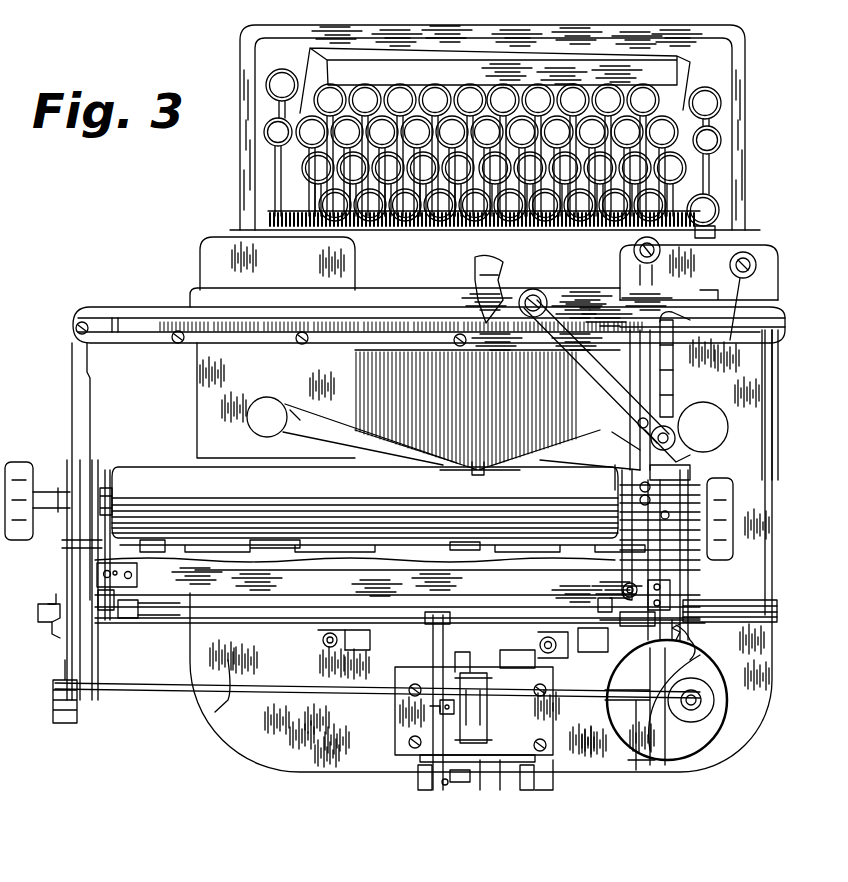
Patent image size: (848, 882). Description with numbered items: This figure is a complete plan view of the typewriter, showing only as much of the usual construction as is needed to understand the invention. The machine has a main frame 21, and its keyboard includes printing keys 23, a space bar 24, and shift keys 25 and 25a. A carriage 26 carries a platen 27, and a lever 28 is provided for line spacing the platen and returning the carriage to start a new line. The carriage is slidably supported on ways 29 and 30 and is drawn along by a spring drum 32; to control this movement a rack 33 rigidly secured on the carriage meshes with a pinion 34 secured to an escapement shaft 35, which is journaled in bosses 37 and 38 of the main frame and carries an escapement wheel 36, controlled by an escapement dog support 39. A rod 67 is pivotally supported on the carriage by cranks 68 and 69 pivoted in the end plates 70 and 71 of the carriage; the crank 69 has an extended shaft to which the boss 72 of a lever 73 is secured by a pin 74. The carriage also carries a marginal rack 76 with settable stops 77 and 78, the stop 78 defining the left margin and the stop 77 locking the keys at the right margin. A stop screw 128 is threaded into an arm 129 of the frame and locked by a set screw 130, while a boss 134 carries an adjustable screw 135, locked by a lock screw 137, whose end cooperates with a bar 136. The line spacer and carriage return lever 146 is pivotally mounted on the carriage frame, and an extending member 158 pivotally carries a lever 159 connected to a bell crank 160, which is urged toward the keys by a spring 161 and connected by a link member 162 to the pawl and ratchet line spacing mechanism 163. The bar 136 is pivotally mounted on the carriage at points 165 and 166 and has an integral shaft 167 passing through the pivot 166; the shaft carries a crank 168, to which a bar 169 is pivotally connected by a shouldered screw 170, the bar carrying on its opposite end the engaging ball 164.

The main frame 21 is at (742, 160).
The printing keys 23 is at (318, 163).
The space bar 24 is at (495, 80).
The shift key 25 is at (268, 82).
The shift key 25a is at (722, 104).
The carriage 26 is at (128, 292).
The platen 27 is at (178, 452).
The lever 28 is at (560, 290).
The way 29 is at (738, 390).
The way 30 is at (760, 606).
The spring drum 32 is at (698, 737).
The rack 33 is at (228, 700).
The pinion 34 is at (485, 668).
The escapement shaft 35 is at (485, 730).
The escapement wheel 36 is at (505, 775).
The boss 37 is at (520, 660).
The boss 38 is at (535, 775).
The escapement dog support 39 is at (468, 782).
The rod 67 is at (175, 604).
The crank 68 is at (625, 640).
The crank 69 is at (115, 598).
The end plate 70 is at (695, 645).
The end plate 71 is at (95, 650).
The boss 72 is at (57, 602).
The lever 73 is at (40, 614).
The pin 74 is at (58, 632).
The marginal rack 76 is at (356, 642).
The stop 77 is at (312, 648).
The stop 78 is at (560, 655).
The stop screw 128 is at (448, 790).
The arm 129 is at (515, 790).
The set screw 130 is at (442, 786).
The boss 134 is at (440, 708).
The adjustable screw 135 is at (433, 650).
The bar 136 is at (165, 620).
The lock screw 137 is at (432, 716).
The line spacer and carriage return lever 146 is at (702, 308).
The extending member 158 is at (620, 470).
The lever 159 is at (673, 392).
The bell crank 160 is at (668, 334).
The spring 161 is at (666, 350).
The link member 162 is at (625, 445).
The pawl and ratchet line spacing mechanism 163 is at (690, 468).
The engaging member or ball 164 is at (712, 448).
The pivot point 165 is at (125, 615).
The pivot 166 is at (600, 608).
The shaft 167 is at (670, 590).
The crank 168 is at (690, 600).
The bar 169 is at (682, 565).
The shouldered screw 170 is at (690, 632).